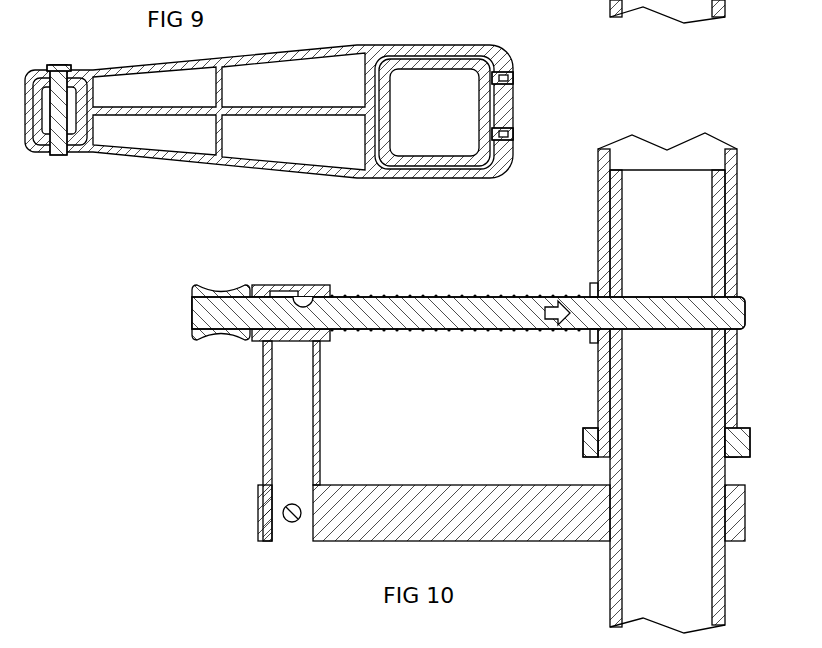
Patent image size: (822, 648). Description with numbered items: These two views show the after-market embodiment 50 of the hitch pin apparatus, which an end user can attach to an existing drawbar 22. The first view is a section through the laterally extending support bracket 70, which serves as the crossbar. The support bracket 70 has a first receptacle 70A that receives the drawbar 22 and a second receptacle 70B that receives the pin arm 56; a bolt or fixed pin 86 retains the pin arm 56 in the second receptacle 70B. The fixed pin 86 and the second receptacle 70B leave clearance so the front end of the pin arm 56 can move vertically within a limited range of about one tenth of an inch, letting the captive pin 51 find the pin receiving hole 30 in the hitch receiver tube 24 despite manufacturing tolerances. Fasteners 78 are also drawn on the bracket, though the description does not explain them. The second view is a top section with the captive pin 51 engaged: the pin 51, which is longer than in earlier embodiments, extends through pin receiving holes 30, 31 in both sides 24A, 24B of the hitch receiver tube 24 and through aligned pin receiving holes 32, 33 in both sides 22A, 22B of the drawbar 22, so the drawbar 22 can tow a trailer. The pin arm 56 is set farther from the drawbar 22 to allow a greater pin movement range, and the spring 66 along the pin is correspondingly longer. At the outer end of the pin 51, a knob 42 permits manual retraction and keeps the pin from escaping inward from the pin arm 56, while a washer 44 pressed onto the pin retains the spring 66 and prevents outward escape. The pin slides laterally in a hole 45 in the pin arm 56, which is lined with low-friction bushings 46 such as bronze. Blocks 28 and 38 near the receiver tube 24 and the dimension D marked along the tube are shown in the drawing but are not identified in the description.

In FIG. 9, the drawbar 22 is at (435, 67).
In FIG. 10, the drawbar 22 is at (680, 452).
In FIG. 10, the first side of drawbar 22A is at (617, 222).
In FIG. 10, the second side of drawbar 22B is at (716, 396).
In FIG. 10, the hitch receiver tube 24 is at (738, 250).
In FIG. 10, the first side of hitch receiver tube 24A is at (604, 222).
In FIG. 10, the second side of hitch receiver tube 24B is at (733, 398).
In FIG. 10, the stop shoulder 28 is at (595, 474).
In FIG. 10, the pin receiving hole 30 is at (602, 342).
In FIG. 10, the pin receiving hole 31 is at (731, 297).
In FIG. 10, the pin receiving hole 32 is at (621, 343).
In FIG. 10, the pin receiving hole 33 is at (719, 297).
In FIG. 10, the stop block 38 is at (584, 430).
In FIG. 10, the knob 42 is at (203, 290).
In FIG. 10, the washer 44 is at (590, 292).
In FIG. 10, the hole 45 is at (296, 296).
In FIG. 10, the bushings 46 is at (257, 288).
In FIG. 10, the after-market embodiment 50 is at (190, 432).
In FIG. 10, the captive pin 51 is at (489, 310).
In FIG. 9, the pin arm 56 is at (85, 93).
In FIG. 10, the pin arm 56 is at (316, 413).
In FIG. 10, the spring 66 is at (432, 296).
In FIG. 9, the support bracket 70 is at (262, 55).
In FIG. 10, the support bracket 70 is at (454, 497).
In FIG. 9, the first receptacle 70A is at (350, 135).
In FIG. 9, the second receptacle 70B is at (106, 128).
In FIG. 9, the fastener 78 is at (513, 82).
In FIG. 9, the bolt or fixed pin 86 is at (58, 64).
In FIG. 10, the bolt or fixed pin 86 is at (290, 504).
In FIG. 10, the distance D is at (742, 170).